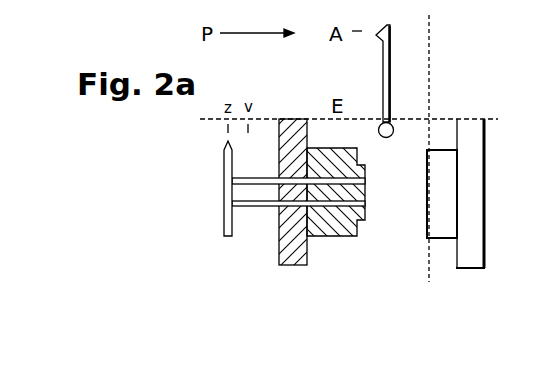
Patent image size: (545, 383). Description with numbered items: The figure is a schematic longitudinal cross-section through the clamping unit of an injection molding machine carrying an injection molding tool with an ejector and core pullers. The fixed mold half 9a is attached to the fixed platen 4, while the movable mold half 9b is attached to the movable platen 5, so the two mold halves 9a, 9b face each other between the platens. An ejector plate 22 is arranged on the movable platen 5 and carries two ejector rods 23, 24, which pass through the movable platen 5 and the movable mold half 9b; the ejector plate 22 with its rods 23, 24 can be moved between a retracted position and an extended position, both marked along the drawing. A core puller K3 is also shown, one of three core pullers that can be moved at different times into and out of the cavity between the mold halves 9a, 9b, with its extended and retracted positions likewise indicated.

The fixed platen 4 is at (472, 124).
The movable platen 5 is at (292, 124).
The fixed mold half 9a is at (442, 236).
The movable mold half 9b is at (326, 226).
The ejector plate 22 is at (232, 200).
The ejector rod 23 is at (250, 177).
The ejector rod 24 is at (262, 204).
The core puller K3 is at (391, 42).